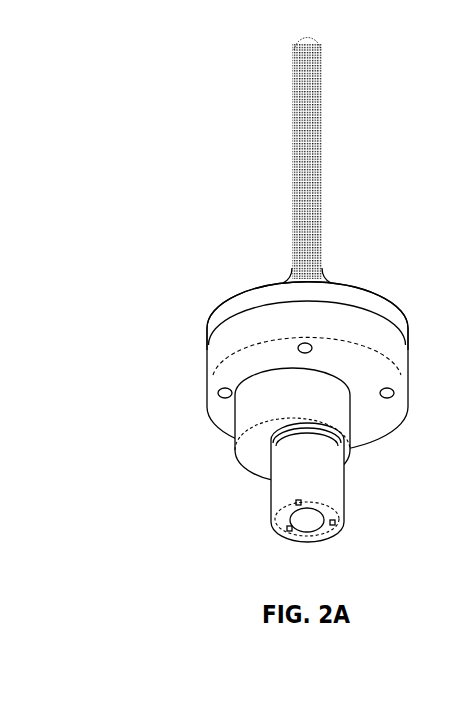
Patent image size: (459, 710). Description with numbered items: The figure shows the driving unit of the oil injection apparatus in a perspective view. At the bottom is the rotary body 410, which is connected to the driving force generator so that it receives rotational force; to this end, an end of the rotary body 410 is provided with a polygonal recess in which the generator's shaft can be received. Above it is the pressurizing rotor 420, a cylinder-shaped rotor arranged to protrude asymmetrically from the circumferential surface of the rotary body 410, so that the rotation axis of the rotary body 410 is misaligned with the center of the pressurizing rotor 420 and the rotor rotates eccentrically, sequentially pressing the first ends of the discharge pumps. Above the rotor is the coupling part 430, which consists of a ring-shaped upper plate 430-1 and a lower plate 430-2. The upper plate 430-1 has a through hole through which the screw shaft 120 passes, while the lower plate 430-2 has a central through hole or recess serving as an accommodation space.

The screw shaft 120 is at (303, 136).
The rotary body 410 is at (300, 481).
The pressurizing rotor 420 is at (257, 400).
The coupling part 430 is at (211, 367).
The upper plate 430-1 is at (213, 312).
The lower plate 430-2 is at (211, 359).